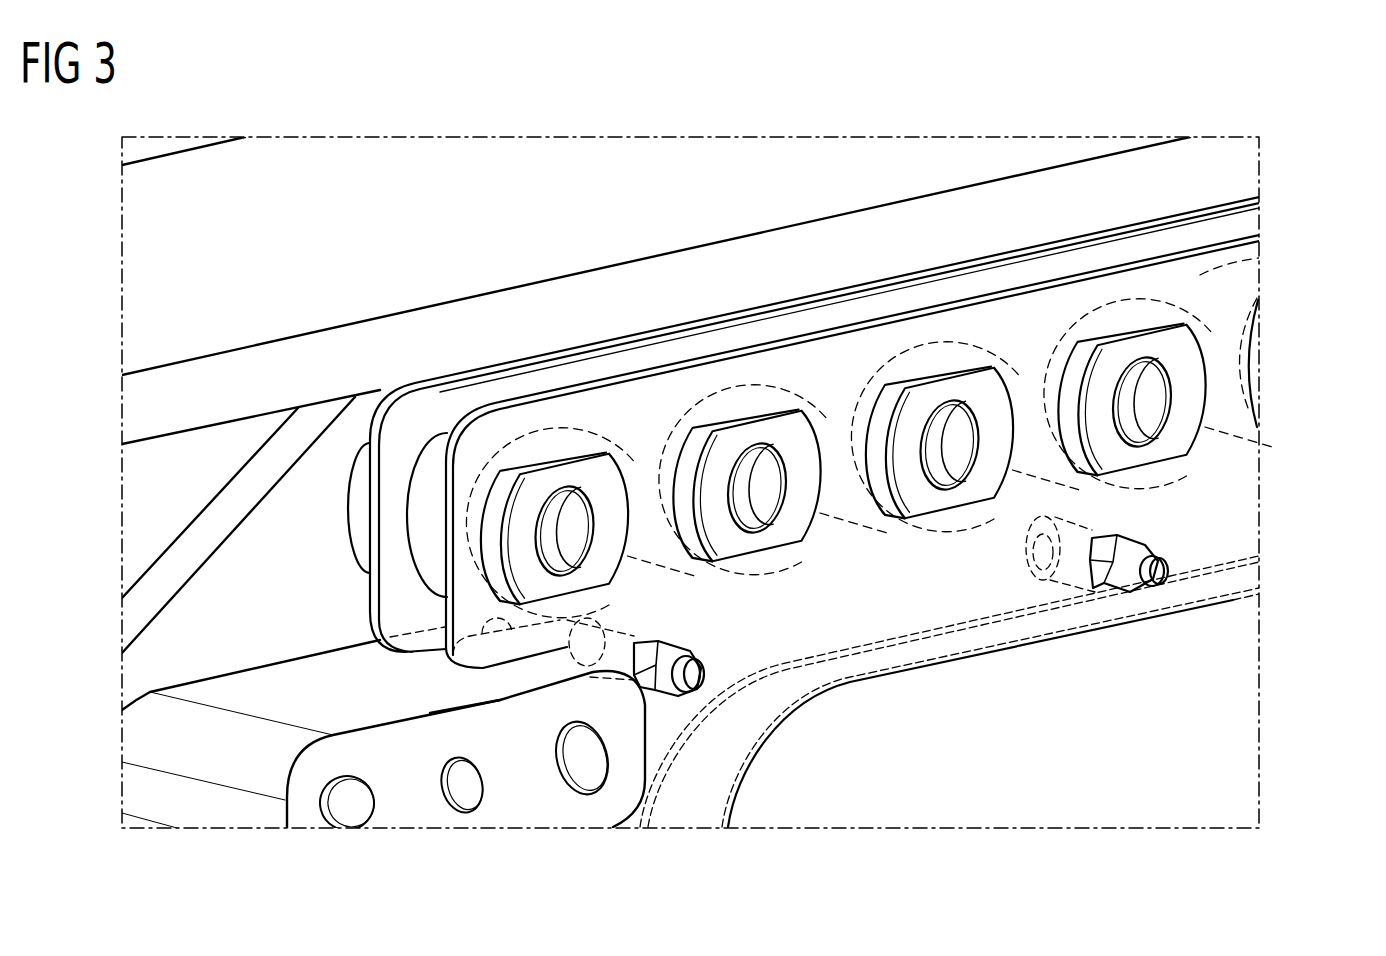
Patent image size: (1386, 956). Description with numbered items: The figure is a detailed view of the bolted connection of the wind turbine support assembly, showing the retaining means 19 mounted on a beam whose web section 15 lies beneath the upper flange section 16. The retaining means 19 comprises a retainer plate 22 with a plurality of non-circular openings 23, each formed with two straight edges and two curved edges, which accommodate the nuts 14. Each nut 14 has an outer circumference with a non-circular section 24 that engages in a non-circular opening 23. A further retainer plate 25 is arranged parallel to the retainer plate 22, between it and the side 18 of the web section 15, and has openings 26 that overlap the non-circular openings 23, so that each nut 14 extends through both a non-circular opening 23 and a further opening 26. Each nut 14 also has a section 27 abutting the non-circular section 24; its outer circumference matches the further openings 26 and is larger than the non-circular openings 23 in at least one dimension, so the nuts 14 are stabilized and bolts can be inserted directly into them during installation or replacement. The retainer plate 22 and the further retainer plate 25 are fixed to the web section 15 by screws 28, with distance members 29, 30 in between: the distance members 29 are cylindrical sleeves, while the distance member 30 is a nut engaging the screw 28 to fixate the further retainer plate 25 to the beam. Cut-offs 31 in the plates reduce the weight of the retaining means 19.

The nut 14 is at (1187, 385).
The web section 15 is at (750, 738).
The upper flange section 16 is at (1092, 187).
The side of the web section 18 is at (465, 776).
The retaining means 19 is at (1230, 482).
The retainer plate 22 is at (445, 582).
The non-circular opening 23 is at (567, 447).
The non-circular section 24 is at (760, 440).
The further retainer plate 25 is at (393, 488).
The opening 26 is at (422, 462).
The section 27 is at (425, 527).
The screw 28 is at (1080, 568).
The distance member 29 is at (1150, 552).
The distance member 30 is at (1093, 532).
The cut-off 31 is at (1237, 597).